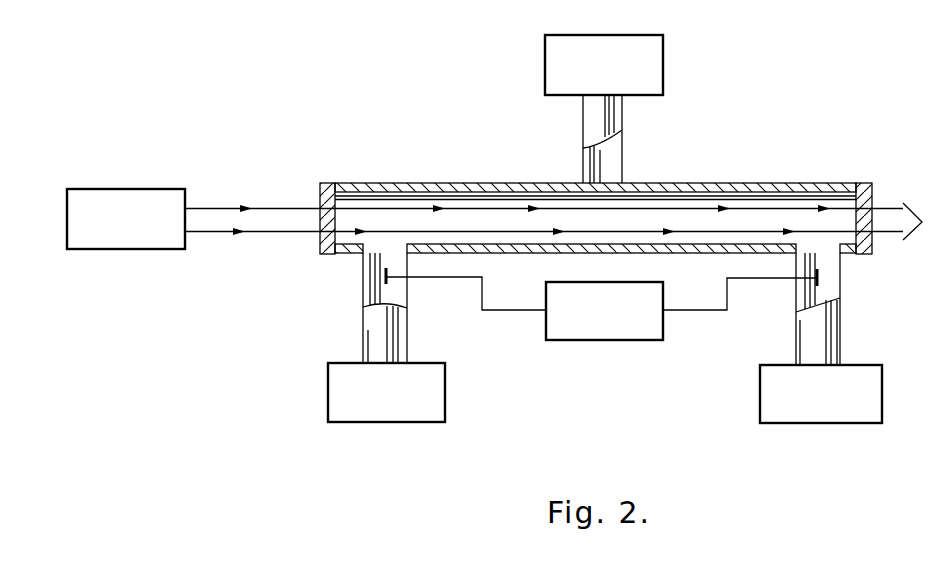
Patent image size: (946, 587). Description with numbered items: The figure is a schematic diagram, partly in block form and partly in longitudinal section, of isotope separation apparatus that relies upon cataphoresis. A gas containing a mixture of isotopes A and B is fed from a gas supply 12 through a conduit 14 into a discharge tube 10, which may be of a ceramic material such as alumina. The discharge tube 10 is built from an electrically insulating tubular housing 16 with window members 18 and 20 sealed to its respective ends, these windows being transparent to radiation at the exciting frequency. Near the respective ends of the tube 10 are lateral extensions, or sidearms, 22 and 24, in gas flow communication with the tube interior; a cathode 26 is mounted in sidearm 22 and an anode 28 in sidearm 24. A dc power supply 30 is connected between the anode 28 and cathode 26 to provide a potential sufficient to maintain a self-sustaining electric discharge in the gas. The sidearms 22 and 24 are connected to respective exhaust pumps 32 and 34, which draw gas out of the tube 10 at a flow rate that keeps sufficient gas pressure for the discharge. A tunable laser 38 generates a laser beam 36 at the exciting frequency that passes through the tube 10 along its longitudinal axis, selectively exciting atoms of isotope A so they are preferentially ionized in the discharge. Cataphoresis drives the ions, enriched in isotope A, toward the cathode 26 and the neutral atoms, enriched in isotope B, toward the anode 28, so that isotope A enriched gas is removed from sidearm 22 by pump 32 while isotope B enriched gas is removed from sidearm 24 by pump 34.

The discharge tube 10 is at (607, 198).
The gas supply 12 is at (655, 40).
The conduit 14 is at (582, 110).
The electrically insulating tubular housing 16 is at (418, 183).
The window member 18 is at (872, 190).
The window member 20 is at (328, 190).
The sidearm 22 is at (796, 262).
The sidearm 24 is at (363, 262).
The cathode 26 is at (812, 283).
The anode 28 is at (393, 284).
The dc power supply 30 is at (549, 337).
The exhaust pump 32 is at (868, 368).
The exhaust pump 34 is at (336, 418).
The laser beam 36 is at (222, 222).
The tunable laser 38 is at (72, 243).